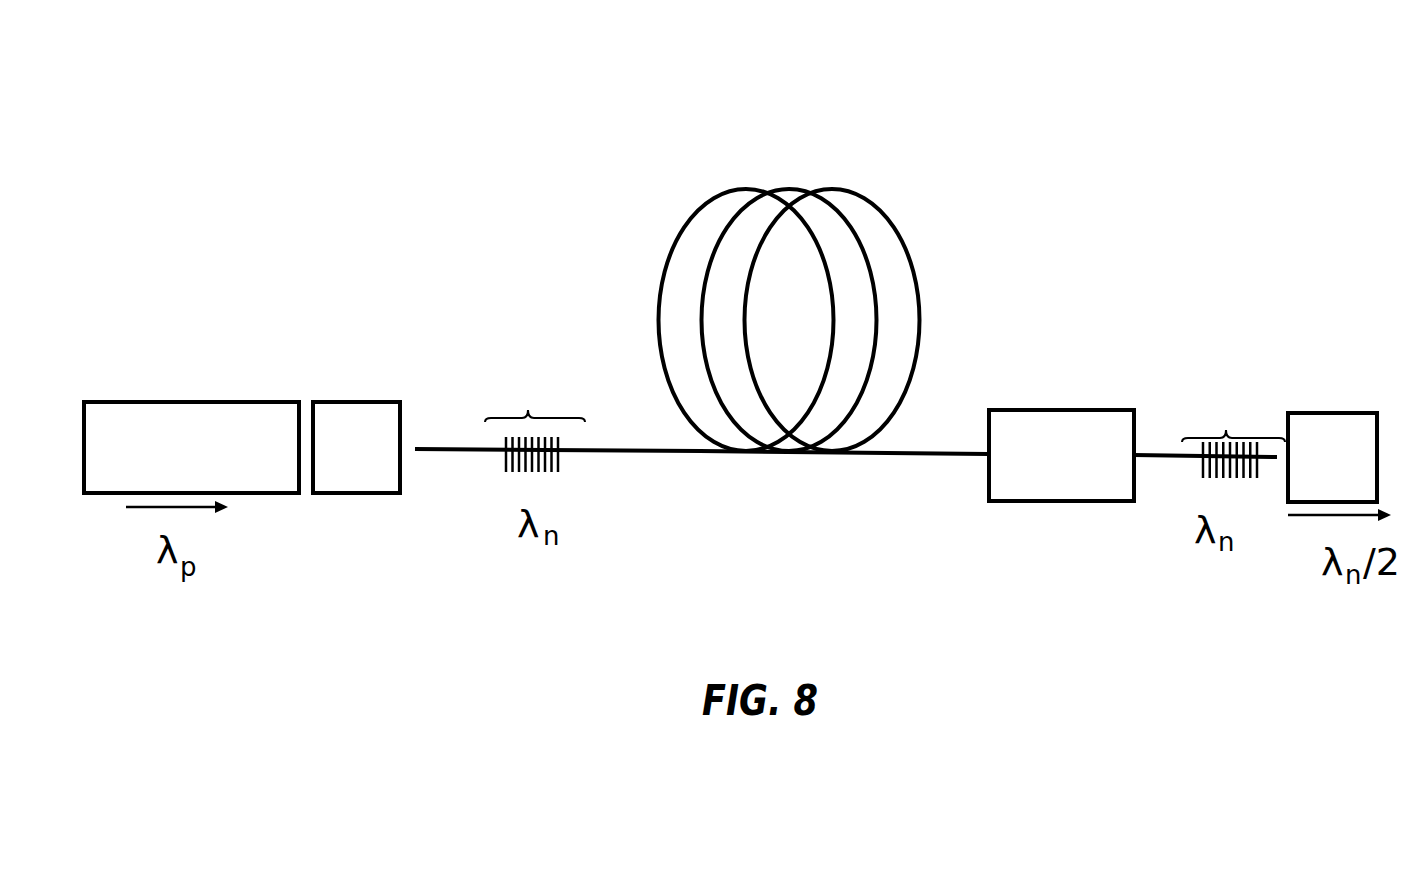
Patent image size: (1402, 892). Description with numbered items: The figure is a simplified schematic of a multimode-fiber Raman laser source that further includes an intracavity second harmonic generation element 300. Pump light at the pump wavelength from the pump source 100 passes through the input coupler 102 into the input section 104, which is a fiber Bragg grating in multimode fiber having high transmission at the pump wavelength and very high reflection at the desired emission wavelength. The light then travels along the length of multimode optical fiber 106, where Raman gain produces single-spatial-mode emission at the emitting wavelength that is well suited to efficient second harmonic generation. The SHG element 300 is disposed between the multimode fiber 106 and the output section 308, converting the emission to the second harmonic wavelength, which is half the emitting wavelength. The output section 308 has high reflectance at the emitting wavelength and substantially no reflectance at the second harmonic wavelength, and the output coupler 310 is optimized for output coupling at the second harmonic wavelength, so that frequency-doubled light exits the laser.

The pump source 100 is at (213, 403).
The input coupler 102 is at (357, 403).
The input section 104 is at (528, 410).
The length of multimode optical fiber 106 is at (787, 188).
The second harmonic generation element 300 is at (1046, 409).
The output section 308 is at (1226, 430).
The output coupler 310 is at (1332, 412).